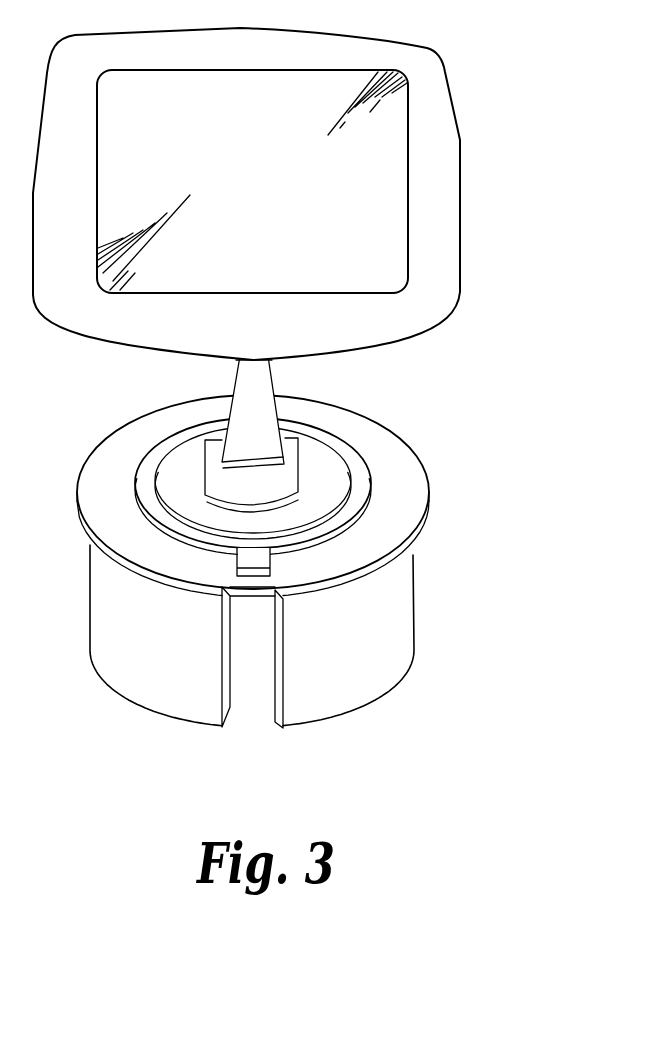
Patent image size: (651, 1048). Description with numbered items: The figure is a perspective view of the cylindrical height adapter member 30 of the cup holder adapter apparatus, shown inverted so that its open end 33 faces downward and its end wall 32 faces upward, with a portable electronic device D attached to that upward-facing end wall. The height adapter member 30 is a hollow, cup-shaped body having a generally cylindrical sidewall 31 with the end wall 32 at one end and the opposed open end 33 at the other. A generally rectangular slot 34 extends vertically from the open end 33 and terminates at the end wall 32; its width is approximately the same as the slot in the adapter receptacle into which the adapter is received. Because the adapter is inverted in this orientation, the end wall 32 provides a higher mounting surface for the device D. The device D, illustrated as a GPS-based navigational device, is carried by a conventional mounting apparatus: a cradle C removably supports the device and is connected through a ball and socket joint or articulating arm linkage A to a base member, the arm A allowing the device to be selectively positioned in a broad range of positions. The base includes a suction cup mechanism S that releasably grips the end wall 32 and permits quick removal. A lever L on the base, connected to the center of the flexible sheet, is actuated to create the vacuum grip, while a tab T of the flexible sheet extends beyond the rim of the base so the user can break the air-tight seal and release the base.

The portable electronic device D is at (474, 186).
The cradle C is at (246, 354).
The articulating arm linkage A is at (262, 414).
The suction cup mechanism S is at (203, 460).
The lever L is at (298, 463).
The tab T is at (272, 558).
The height adapter member 30 is at (275, 586).
The cylindrical sidewall 31 is at (100, 618).
The end wall 32 is at (410, 495).
The open end 33 is at (205, 728).
The slot 34 is at (232, 706).